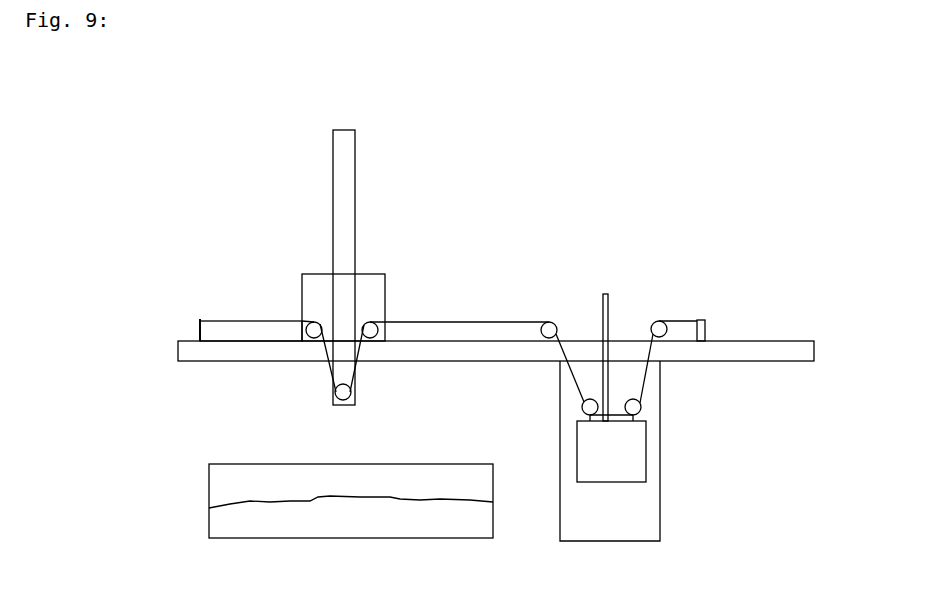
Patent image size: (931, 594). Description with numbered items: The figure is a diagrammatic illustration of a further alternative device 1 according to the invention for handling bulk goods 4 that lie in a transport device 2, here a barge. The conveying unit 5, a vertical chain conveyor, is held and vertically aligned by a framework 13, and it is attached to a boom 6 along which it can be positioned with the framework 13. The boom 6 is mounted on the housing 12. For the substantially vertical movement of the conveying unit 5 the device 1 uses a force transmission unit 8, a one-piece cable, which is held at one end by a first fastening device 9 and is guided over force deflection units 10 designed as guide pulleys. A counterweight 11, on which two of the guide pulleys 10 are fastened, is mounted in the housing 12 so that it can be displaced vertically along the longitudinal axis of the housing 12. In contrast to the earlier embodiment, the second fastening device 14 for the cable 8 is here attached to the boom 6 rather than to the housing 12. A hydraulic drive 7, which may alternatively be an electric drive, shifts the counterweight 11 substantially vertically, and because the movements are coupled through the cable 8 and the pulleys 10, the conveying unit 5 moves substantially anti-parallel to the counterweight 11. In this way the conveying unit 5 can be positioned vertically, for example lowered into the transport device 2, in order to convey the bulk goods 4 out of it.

The device 1 is at (508, 152).
The transport device 2 is at (232, 464).
The bulk goods 4 is at (256, 524).
The conveying unit 5 is at (333, 188).
The boom 6 is at (260, 354).
The hydraulic drive 7 is at (609, 308).
The force transmission unit 8 is at (234, 320).
The first fastening device 9 is at (200, 333).
The force deflection units 10 is at (547, 327).
The counterweight 11 is at (646, 453).
The housing 12 is at (660, 417).
The framework 13 is at (302, 274).
The second fastening device 14 is at (705, 320).